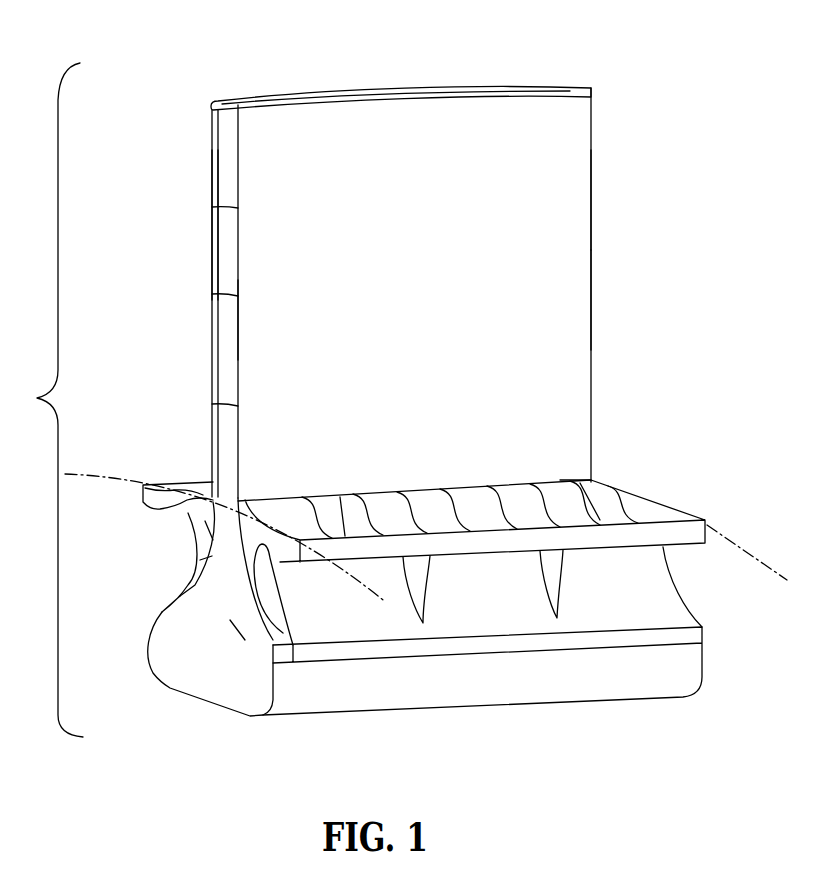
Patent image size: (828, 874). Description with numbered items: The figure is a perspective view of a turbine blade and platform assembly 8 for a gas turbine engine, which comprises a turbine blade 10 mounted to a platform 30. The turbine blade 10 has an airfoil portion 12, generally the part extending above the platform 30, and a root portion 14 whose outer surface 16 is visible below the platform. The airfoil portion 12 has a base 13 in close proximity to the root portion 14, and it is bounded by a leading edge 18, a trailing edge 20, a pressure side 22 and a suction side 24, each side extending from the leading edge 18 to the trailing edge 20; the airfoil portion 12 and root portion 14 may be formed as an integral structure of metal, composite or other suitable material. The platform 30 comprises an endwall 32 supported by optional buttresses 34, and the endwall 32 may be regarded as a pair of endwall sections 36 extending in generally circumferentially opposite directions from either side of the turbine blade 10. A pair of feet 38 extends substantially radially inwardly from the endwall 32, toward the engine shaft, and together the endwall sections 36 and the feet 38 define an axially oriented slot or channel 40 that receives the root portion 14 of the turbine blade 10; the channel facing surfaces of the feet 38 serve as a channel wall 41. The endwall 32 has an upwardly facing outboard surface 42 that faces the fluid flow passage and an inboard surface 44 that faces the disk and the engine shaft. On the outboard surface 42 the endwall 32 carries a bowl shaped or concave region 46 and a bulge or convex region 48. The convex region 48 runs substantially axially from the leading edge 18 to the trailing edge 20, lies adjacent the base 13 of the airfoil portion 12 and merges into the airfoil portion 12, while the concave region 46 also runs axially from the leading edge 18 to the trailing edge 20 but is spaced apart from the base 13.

The turbine blade and platform assembly 8 is at (50, 400).
The turbine blade 10 is at (163, 132).
The airfoil portion 12 is at (273, 320).
The base 13 is at (562, 477).
The root portion 14 is at (187, 663).
The outer surface 16 is at (300, 657).
The leading edge 18 is at (230, 252).
The trailing edge 20 is at (592, 269).
The pressure side 22 is at (258, 93).
The suction side 24 is at (533, 200).
The platform 30 is at (168, 587).
The endwall 32 is at (157, 497).
The buttresses 34 is at (413, 583).
The endwall sections 36 is at (177, 481).
The feet 38 is at (250, 560).
The channel 40 is at (222, 560).
The channel wall 41 is at (250, 607).
The outboard surface 42 is at (592, 492).
The inboard surface 44 is at (280, 567).
The concave region 46 is at (382, 523).
The convex region 48 is at (360, 498).